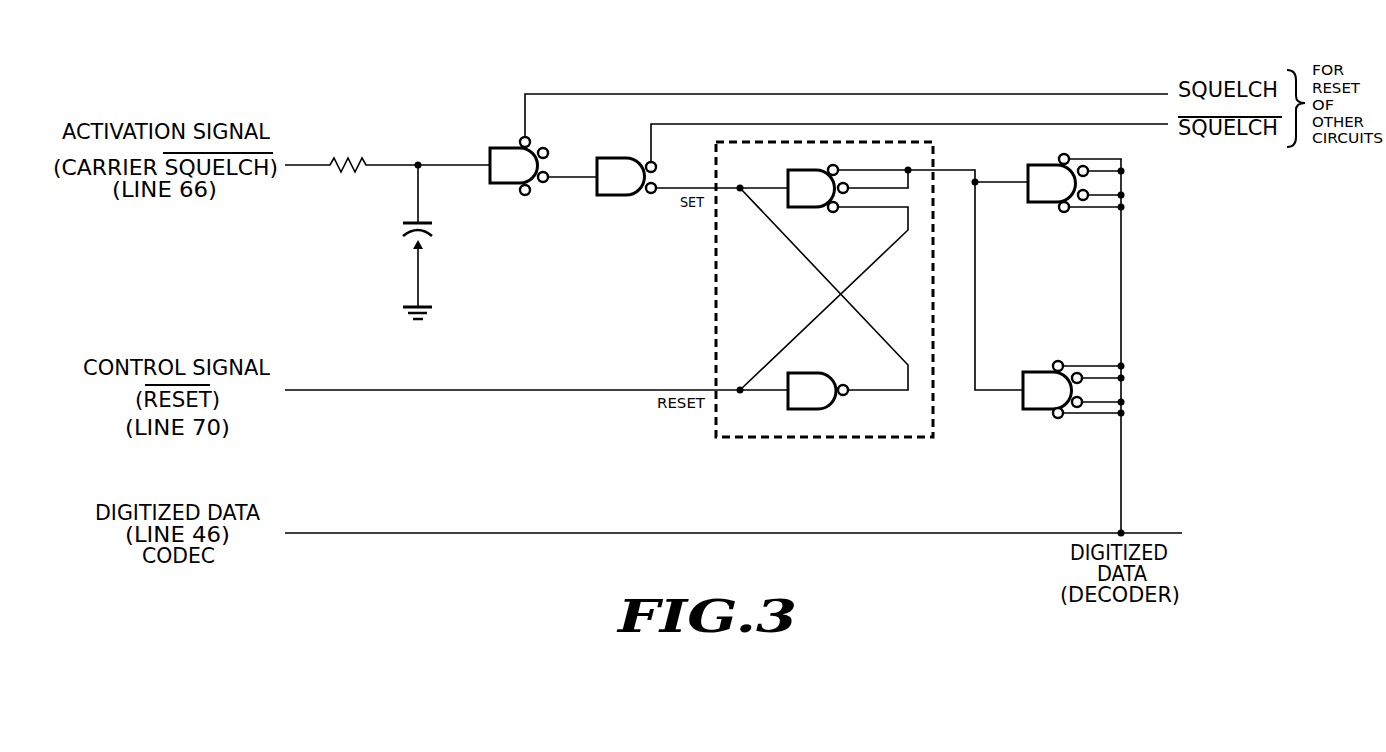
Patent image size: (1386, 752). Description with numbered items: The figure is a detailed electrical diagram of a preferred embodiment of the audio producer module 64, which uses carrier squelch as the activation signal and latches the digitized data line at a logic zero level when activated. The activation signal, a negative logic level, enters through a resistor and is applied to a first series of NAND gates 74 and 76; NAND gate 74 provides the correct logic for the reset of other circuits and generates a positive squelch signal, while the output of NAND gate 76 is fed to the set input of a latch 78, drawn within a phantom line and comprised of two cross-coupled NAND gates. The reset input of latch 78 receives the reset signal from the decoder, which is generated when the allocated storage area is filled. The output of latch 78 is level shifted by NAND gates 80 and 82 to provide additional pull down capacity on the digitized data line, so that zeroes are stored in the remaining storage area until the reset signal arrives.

The audio producer module 64 is at (962, 66).
The NAND gate 74 is at (497, 185).
The NAND gate 76 is at (613, 197).
The latch 78 is at (755, 440).
The NAND gate 80 is at (1037, 204).
The NAND gate 82 is at (1038, 411).